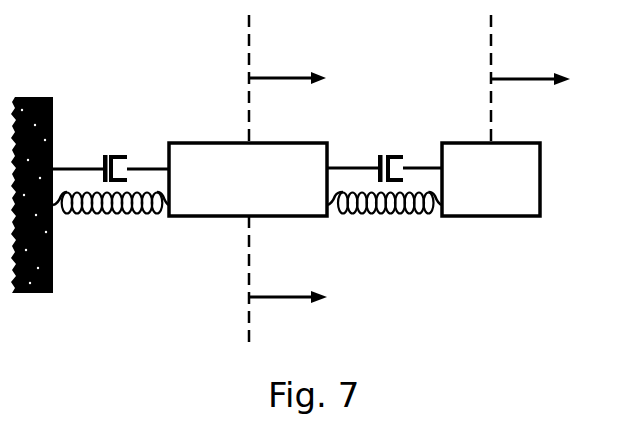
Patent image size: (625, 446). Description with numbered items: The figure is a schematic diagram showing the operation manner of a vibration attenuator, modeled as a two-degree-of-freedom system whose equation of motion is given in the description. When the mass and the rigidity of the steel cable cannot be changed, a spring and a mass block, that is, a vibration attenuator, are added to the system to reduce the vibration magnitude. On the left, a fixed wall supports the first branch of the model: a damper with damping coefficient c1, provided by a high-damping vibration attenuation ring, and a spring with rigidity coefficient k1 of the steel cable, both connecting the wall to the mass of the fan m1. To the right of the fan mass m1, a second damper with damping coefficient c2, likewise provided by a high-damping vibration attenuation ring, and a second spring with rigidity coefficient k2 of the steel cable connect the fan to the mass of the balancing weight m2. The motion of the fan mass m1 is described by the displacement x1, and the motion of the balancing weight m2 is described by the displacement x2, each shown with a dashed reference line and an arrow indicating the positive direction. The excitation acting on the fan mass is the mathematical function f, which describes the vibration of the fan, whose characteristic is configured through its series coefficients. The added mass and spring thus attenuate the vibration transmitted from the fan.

The mass of the fan m1 is at (248, 179).
The mass of the balancing weight m2 is at (491, 179).
The damping coefficient c1 is at (111, 139).
The damping coefficient c2 is at (384, 139).
The rigidity coefficient of the steel cable k1 is at (111, 228).
The rigidity coefficient of the steel cable k2 is at (384, 228).
The displacement of the fan mass x1 is at (302, 180).
The displacement of the balancing weight x2 is at (550, 79).
The vibration function of the fan f is at (292, 272).